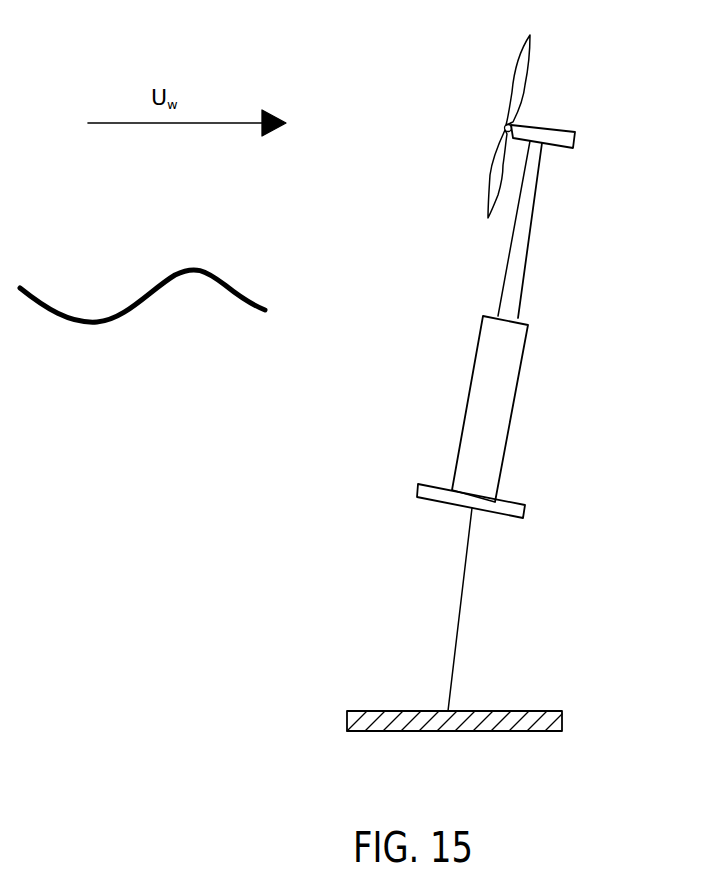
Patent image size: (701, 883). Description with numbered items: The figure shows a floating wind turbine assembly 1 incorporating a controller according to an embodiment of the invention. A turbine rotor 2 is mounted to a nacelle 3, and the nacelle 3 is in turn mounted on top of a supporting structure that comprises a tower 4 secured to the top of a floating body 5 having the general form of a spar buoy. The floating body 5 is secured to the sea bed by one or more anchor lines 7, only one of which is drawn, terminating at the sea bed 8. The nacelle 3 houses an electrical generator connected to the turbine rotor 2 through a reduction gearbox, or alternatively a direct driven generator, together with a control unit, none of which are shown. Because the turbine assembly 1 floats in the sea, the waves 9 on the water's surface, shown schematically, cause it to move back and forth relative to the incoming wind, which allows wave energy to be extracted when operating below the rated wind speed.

The floating wind turbine assembly 1 is at (324, 545).
The turbine rotor 2 is at (520, 77).
The nacelle 3 is at (570, 137).
The tower 4 is at (517, 278).
The floating body 5 is at (500, 438).
The anchor line 7 is at (460, 647).
The foundation 8 is at (433, 720).
The waves 9 is at (103, 323).